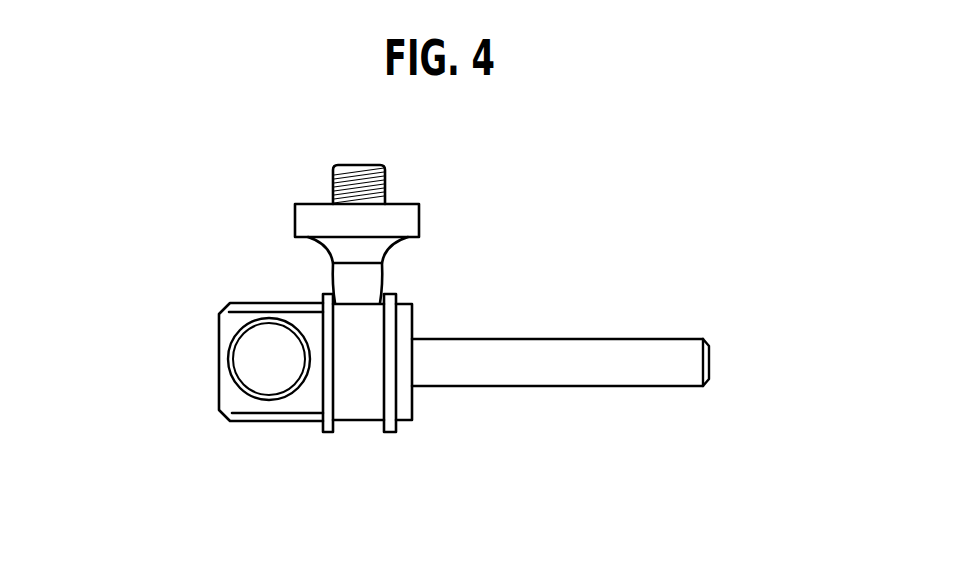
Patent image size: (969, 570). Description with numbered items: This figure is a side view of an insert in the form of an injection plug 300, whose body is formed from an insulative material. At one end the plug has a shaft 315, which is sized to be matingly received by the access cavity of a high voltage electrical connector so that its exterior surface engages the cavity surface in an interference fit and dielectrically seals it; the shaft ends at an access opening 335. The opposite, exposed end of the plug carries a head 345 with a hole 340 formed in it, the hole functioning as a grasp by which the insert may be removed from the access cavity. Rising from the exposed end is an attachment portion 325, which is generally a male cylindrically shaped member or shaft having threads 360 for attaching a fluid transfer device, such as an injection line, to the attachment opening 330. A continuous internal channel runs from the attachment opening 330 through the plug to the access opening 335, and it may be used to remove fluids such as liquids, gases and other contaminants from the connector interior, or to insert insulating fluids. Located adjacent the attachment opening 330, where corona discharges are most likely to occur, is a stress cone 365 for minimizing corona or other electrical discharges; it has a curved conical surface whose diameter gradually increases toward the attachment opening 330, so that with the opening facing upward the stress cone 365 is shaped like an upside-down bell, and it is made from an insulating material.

The injection plug 300 is at (168, 364).
The shaft 315 is at (557, 363).
The attachment portion 325 is at (330, 188).
The attachment opening 330 is at (350, 163).
The access opening 335 is at (713, 363).
The hole 340 is at (268, 383).
The head 345 is at (231, 398).
The threads 360 is at (385, 178).
The stress cone 365 is at (421, 218).